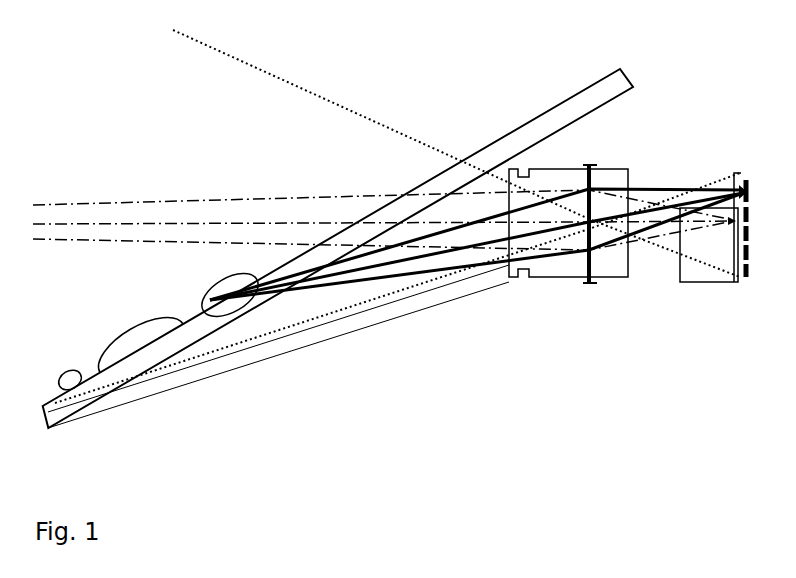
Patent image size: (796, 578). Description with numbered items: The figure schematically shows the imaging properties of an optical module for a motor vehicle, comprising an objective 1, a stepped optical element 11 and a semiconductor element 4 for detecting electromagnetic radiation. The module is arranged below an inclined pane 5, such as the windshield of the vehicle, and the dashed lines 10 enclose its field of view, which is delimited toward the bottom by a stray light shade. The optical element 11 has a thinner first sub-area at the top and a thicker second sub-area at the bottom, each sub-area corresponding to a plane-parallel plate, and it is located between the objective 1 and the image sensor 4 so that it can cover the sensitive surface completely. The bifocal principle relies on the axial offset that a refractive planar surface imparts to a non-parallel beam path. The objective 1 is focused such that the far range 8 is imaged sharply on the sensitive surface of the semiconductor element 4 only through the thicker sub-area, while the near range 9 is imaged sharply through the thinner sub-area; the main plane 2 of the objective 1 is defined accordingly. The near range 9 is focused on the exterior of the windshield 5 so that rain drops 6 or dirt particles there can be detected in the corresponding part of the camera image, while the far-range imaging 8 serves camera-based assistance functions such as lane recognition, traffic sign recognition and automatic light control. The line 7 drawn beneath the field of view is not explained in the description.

The objective 1 is at (540, 278).
The main plane 2 is at (595, 283).
The semiconductor element 4 is at (748, 195).
The inclined pane 5 is at (565, 113).
The rain drops 6 is at (163, 315).
The reference line 7 is at (255, 353).
The far range 8 is at (133, 240).
The near range 9 is at (712, 195).
The dashed lines 10 is at (302, 90).
The optical element 11 is at (695, 283).